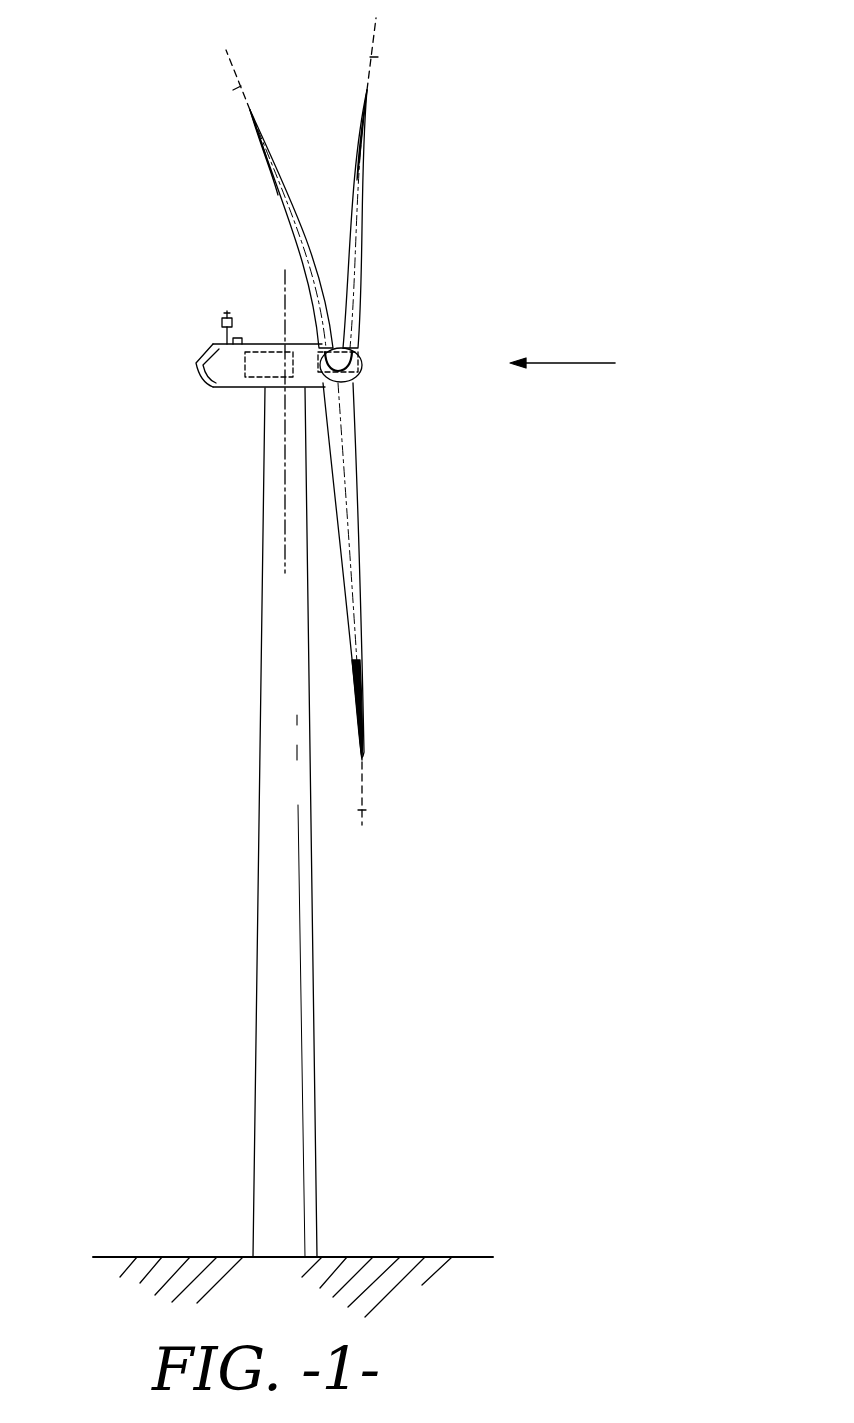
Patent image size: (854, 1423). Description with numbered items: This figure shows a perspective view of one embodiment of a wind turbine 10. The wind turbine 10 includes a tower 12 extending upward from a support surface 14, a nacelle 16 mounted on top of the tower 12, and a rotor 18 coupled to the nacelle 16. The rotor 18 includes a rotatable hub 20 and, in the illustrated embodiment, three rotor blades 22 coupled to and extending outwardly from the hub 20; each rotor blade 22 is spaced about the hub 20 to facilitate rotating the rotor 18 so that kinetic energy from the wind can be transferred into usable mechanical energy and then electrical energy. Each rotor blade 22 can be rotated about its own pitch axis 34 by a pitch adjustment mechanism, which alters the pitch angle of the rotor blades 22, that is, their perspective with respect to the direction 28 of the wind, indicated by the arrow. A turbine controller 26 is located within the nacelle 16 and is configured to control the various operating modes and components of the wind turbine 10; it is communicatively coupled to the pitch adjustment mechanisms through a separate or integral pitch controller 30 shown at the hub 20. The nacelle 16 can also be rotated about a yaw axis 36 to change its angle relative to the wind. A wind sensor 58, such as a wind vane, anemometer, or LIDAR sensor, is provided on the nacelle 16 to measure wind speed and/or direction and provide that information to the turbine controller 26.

The wind turbine 10 is at (488, 174).
The tower 12 is at (262, 942).
The support surface 14 is at (180, 1257).
The nacelle 16 is at (237, 390).
The rotor 18 is at (369, 338).
The rotatable hub 20 is at (362, 372).
The rotor blade 22 is at (290, 205).
The turbine controller 26 is at (276, 340).
The direction of the wind 28 is at (572, 363).
The pitch controller 30 is at (366, 349).
The pitch axis 34 is at (237, 85).
The yaw axis 36 is at (291, 483).
The wind sensor 58 is at (222, 321).